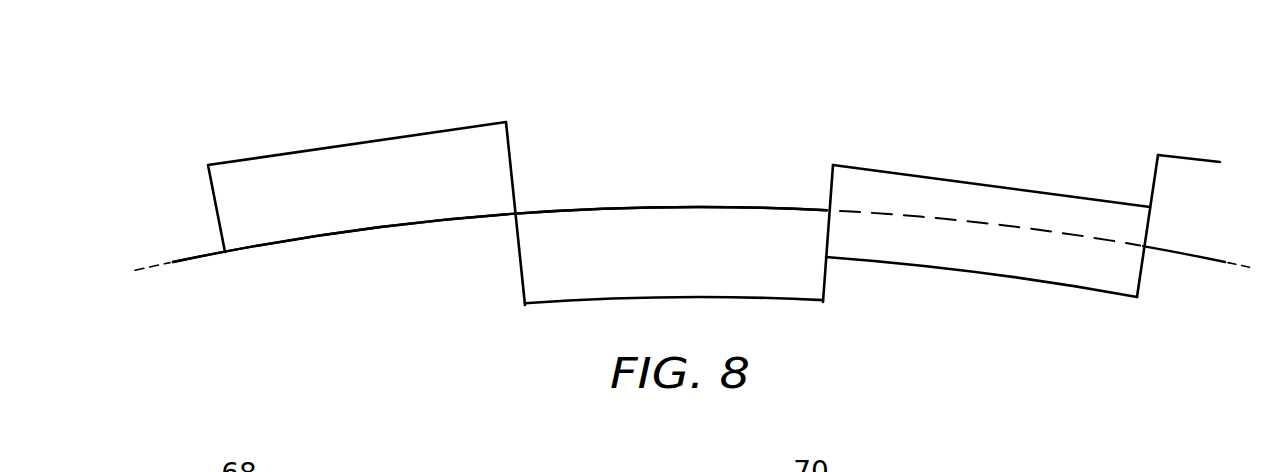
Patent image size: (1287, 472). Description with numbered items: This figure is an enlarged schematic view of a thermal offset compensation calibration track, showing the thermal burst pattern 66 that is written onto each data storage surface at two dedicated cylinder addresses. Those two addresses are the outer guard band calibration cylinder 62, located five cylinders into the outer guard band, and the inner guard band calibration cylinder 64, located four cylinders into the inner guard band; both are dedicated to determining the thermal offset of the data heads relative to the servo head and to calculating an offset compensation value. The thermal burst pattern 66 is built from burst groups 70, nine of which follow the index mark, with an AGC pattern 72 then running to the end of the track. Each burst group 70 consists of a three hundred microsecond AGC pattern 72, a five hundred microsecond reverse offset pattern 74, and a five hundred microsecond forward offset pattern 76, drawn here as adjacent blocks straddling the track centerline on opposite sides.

The outer guard band calibration cylinder 62 is at (183, 262).
The inner guard band calibration cylinder 64 is at (500, 234).
The thermal burst pattern 66 is at (710, 91).
The burst groups 70 is at (432, 279).
The AGC (adjusted gain control) pattern 72 is at (937, 267).
The reverse offset pattern 74 is at (320, 146).
The forward offset pattern 76 is at (698, 300).